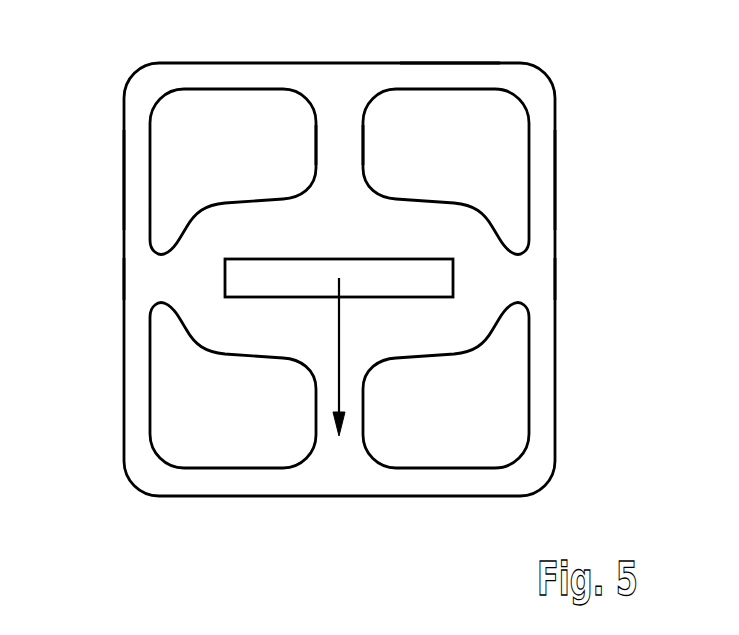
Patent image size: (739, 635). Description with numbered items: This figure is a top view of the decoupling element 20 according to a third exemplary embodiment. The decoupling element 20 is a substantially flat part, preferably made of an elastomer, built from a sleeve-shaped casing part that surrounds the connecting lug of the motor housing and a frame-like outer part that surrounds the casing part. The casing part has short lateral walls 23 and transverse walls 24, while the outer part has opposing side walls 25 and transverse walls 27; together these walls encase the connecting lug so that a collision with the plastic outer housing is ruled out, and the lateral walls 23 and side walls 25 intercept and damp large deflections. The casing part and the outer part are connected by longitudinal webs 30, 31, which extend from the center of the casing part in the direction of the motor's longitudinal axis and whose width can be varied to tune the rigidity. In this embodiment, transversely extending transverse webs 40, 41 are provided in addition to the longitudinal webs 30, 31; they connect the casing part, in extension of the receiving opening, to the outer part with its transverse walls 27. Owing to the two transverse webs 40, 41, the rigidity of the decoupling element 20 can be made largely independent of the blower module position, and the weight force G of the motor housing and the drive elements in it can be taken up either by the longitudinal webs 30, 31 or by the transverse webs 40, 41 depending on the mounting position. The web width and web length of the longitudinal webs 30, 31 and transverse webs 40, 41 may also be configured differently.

The decoupling element 20 is at (213, 78).
The transverse walls of the outer part 27 is at (448, 78).
The longitudinal web 30 is at (337, 135).
The side walls of the outer part 25 is at (135, 171).
The transverse web 40 is at (163, 282).
The transverse web 41 is at (517, 281).
The transverse walls of the casing part 24 is at (288, 221).
The short lateral walls of the casing part 23 is at (196, 280).
The longitudinal web 31 is at (352, 403).
The weight force G is at (339, 330).